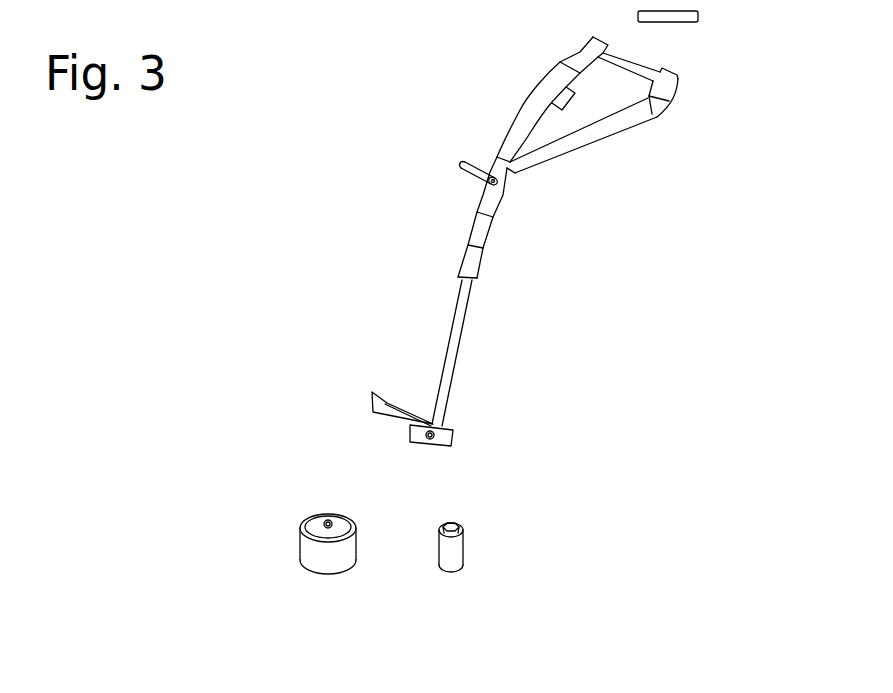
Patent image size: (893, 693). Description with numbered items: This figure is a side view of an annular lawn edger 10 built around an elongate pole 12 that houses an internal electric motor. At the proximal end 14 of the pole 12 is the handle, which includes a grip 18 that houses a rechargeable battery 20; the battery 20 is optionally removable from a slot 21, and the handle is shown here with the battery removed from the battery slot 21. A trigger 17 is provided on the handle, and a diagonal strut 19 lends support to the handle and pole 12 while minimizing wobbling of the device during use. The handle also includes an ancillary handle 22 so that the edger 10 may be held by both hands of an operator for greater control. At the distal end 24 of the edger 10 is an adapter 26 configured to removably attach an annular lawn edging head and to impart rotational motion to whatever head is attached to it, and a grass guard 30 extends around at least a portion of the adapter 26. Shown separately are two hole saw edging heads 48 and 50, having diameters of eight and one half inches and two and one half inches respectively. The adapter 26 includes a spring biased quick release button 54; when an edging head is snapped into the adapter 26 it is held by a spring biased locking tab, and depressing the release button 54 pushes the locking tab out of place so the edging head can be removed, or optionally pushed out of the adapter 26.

The annular lawn edger 10 is at (244, 215).
The elongate pole 12 is at (458, 342).
The proximal end 14 is at (478, 96).
The trigger 17 is at (573, 96).
The grip 18 is at (675, 120).
The diagonal strut 19 is at (555, 157).
The rechargeable battery 20 is at (700, 17).
The battery slot 21 is at (632, 63).
The ancillary handle 22 is at (473, 180).
The distal end 24 is at (518, 382).
The adapter 26 is at (455, 437).
The grass guard 30 is at (387, 402).
The hole saw edging head 48 is at (342, 517).
The hole saw edging head 50 is at (462, 528).
The quick release button 54 is at (438, 447).